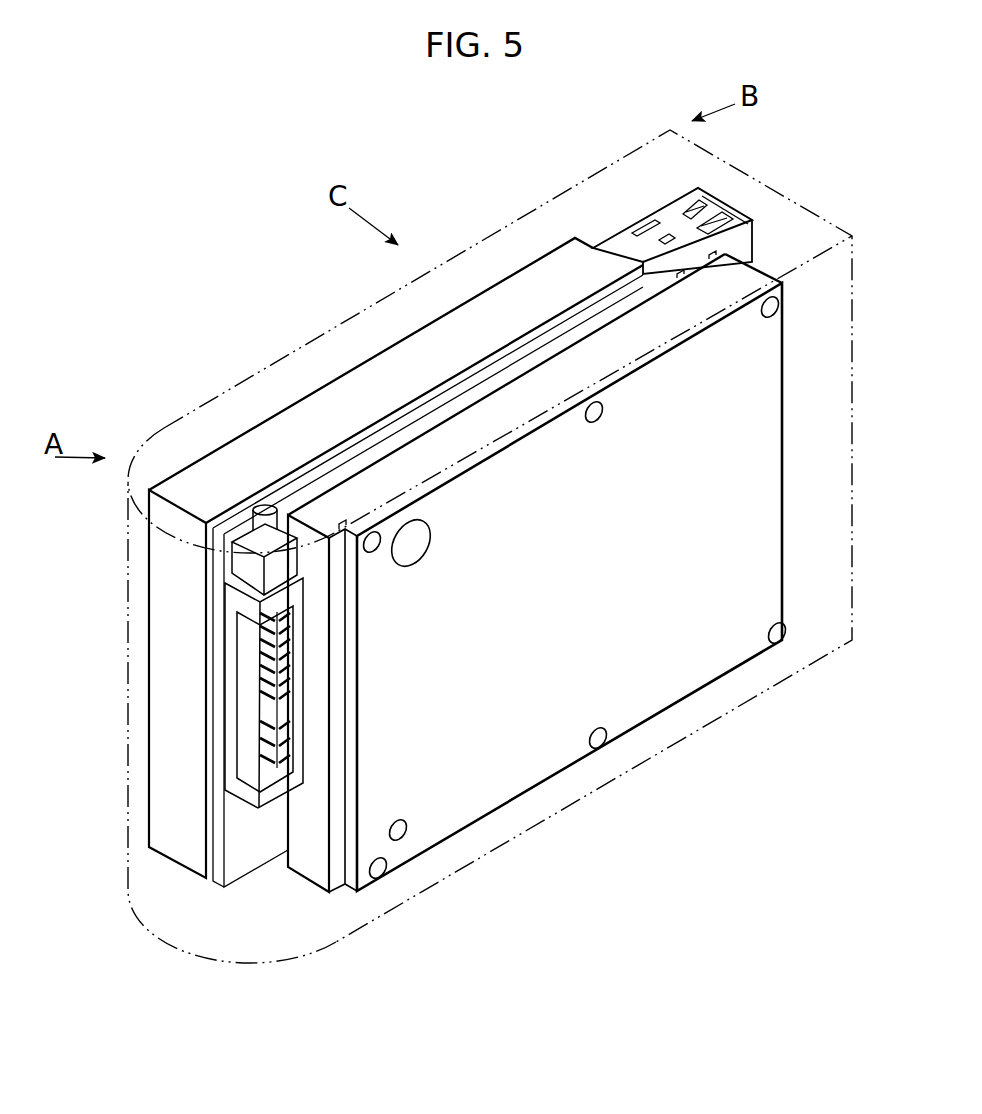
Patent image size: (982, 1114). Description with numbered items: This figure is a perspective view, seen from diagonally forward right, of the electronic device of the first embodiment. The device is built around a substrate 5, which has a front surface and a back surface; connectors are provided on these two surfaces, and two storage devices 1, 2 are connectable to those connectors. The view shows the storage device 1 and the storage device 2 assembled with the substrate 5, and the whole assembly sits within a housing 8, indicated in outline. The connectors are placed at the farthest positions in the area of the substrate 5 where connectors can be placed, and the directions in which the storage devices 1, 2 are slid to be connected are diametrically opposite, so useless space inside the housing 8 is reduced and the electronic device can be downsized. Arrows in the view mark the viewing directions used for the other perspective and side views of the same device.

The storage device 1 is at (797, 399).
The storage device 2 is at (503, 275).
The substrate 5 is at (762, 221).
The housing 8 is at (316, 948).